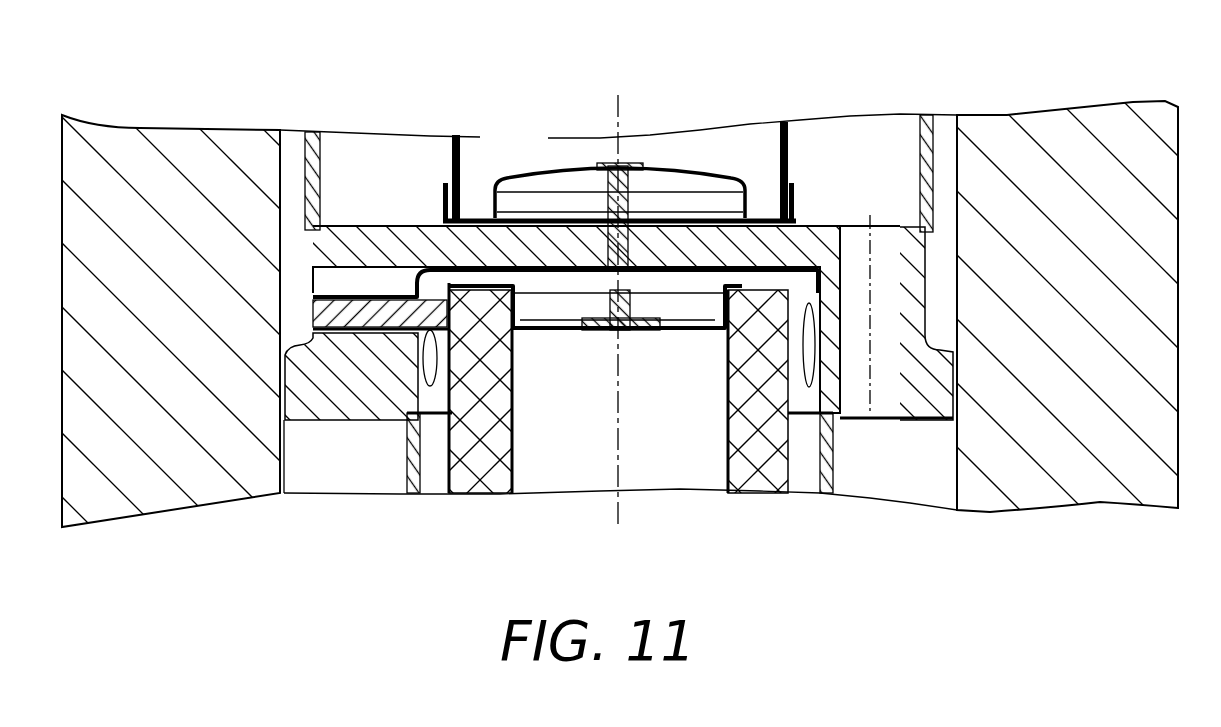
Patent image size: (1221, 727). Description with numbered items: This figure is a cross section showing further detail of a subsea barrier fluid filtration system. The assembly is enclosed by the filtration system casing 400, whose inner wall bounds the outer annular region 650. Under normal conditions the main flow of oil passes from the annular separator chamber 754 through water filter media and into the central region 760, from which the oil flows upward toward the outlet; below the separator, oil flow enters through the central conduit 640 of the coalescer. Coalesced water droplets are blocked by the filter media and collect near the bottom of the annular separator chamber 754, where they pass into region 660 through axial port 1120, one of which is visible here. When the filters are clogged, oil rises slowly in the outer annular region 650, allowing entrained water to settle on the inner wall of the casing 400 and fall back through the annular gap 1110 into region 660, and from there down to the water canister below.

The filtration system casing 400 is at (1102, 275).
The central conduit of coalescer 640 is at (640, 424).
The outer annular region 650 is at (947, 152).
The region 660 is at (916, 482).
The annular separator chamber 754 is at (901, 159).
The central region 760 is at (538, 146).
The annular gap 1110 is at (957, 383).
The axial port 1120 is at (855, 258).